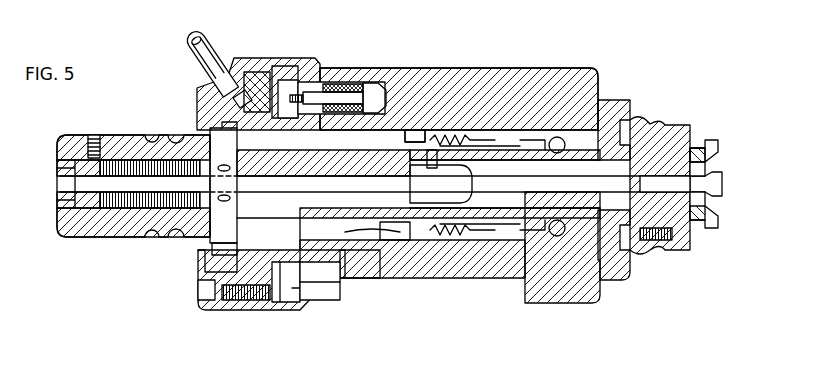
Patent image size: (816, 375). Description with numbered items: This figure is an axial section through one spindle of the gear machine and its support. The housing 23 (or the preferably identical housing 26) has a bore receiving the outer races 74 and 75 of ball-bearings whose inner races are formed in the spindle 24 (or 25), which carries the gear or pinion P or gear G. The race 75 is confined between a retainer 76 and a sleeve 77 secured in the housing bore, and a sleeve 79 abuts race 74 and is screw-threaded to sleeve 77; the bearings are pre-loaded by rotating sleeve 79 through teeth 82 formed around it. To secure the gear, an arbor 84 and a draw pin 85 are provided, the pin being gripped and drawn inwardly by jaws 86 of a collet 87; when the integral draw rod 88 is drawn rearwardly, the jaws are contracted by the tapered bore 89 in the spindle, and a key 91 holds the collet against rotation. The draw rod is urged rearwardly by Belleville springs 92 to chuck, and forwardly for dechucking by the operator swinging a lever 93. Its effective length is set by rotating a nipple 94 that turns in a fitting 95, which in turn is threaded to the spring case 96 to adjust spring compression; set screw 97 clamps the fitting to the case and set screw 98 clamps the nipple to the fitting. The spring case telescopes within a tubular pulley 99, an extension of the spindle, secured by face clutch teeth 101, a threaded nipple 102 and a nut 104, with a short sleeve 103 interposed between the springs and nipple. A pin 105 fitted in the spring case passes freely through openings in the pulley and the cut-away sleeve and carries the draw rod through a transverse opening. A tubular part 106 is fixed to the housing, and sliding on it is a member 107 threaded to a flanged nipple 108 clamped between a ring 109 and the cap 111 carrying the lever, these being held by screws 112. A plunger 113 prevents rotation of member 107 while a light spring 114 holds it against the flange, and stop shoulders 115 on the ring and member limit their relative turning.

The lever 93 is at (190, 53).
The externally flanged nipple 108 is at (240, 94).
The ring 109 is at (254, 92).
The screw-threaded member 107 is at (266, 110).
The stop shoulders 115 is at (300, 92).
The plunger 113 is at (320, 94).
The outer race 74 is at (345, 92).
The light spring 114 is at (382, 84).
The drive spindle 24 is at (412, 150).
The driven spindle 25 is at (415, 136).
The housing 23 is at (472, 70).
The housing 26 is at (459, 99).
The key 91 is at (455, 122).
The outer race 75 is at (560, 130).
The arbor 84 is at (655, 128).
The gear or pinion P is at (690, 148).
The gear G is at (697, 155).
The draw pin 85 is at (678, 218).
The tapered bore 89 is at (642, 244).
The jaws 86 is at (604, 262).
The retainer 76 is at (590, 292).
The sleeve 77 is at (500, 240).
The collet 87 is at (470, 240).
The sleeve 79 is at (425, 240).
The teeth 82 is at (372, 242).
The draw rod 88 is at (350, 280).
The face clutch teeth 101 is at (322, 300).
The tubular part 106 is at (268, 300).
The threaded nipple 102 is at (230, 300).
The nut 104 is at (214, 312).
The screws 112 is at (203, 292).
The pin 105 is at (215, 243).
The short sleeve 103 is at (210, 226).
The Belleville springs 92 is at (152, 212).
The nipple 94 is at (120, 212).
The spring case 96 is at (74, 236).
The fitting 95 is at (60, 226).
The set screw 98 is at (62, 172).
The set screw 97 is at (93, 133).
The tubular pulley 99 is at (170, 133).
The cap 111 is at (200, 88).